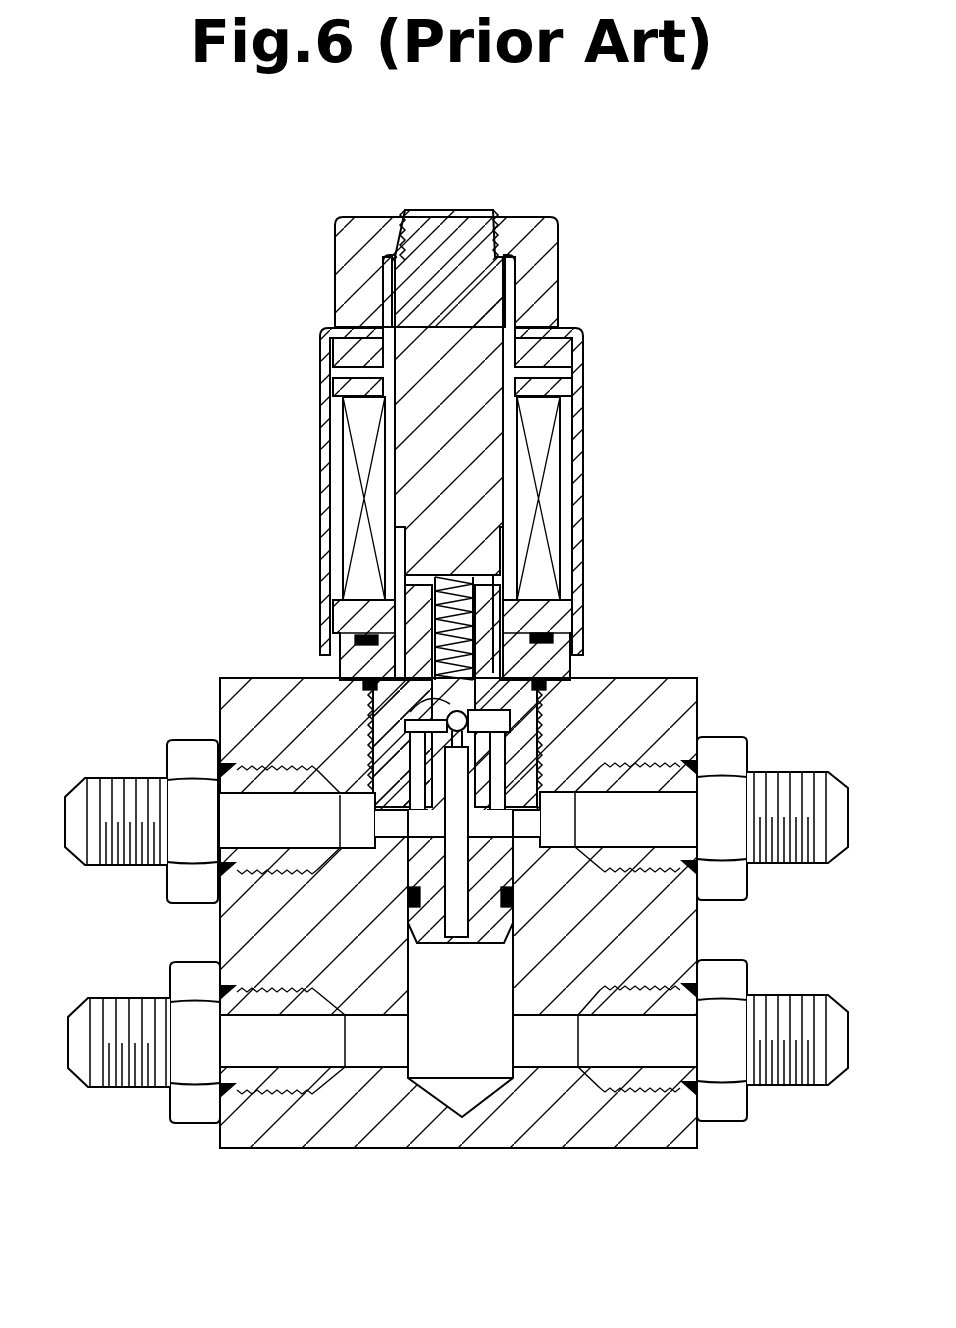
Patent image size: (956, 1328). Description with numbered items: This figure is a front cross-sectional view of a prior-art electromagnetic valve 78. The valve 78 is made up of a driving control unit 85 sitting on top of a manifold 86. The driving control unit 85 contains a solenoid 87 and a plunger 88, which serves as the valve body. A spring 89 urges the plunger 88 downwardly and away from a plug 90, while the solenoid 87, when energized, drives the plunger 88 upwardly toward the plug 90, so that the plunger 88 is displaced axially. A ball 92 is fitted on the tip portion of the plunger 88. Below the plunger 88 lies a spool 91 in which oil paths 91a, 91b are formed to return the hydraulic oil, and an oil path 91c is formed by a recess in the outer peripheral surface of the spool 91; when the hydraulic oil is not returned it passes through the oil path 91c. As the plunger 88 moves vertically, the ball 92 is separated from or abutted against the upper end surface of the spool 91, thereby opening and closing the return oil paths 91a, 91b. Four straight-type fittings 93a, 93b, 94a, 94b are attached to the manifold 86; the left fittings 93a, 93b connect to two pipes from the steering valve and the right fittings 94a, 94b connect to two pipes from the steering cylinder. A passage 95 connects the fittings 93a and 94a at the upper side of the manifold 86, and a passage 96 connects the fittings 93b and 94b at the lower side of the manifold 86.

The electromagnetic valve 78 is at (306, 511).
The driving control unit 85 is at (583, 418).
The manifold 86 is at (678, 678).
The solenoid 87 is at (550, 480).
The plunger (valve body) 88 is at (505, 612).
The spring 89 is at (440, 602).
The plug 90 is at (452, 220).
The spool 91 is at (430, 941).
The oil path 91a is at (462, 944).
The oil path 91b is at (497, 747).
The oil path 91c is at (400, 836).
The ball 92 is at (372, 710).
The straight-type fitting 93a is at (118, 778).
The straight-type fitting 93b is at (122, 998).
The straight-type fitting 94a is at (780, 772).
The straight-type fitting 94b is at (790, 995).
The passage 95 is at (558, 843).
The passage 96 is at (552, 1062).